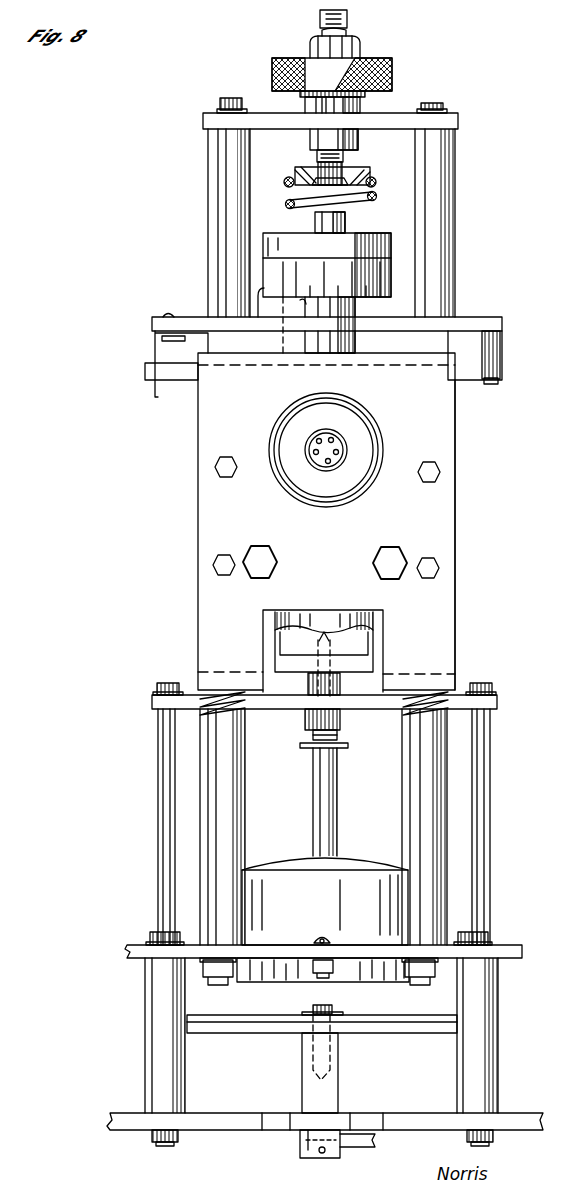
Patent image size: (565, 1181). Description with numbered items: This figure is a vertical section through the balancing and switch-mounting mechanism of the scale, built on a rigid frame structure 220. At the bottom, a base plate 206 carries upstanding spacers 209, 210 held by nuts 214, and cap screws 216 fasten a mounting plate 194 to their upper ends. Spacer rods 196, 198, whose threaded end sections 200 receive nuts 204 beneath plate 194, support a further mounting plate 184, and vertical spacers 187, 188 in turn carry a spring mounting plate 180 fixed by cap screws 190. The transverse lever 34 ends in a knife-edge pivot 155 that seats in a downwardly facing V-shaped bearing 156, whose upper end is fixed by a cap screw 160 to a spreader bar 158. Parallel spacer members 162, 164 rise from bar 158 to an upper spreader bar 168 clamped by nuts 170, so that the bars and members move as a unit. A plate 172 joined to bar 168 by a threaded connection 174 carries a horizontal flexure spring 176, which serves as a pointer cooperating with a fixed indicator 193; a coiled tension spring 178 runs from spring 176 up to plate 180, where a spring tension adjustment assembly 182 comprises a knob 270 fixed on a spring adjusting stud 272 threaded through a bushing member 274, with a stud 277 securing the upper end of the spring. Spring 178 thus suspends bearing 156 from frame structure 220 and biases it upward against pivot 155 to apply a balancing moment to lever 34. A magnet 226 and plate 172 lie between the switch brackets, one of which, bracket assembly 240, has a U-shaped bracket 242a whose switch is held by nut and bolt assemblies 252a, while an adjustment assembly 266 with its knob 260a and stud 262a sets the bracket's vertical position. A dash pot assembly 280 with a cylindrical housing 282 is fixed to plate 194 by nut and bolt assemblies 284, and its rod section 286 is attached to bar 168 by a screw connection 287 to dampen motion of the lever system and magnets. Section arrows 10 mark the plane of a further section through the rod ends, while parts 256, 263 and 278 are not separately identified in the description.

The section line 10 is at (421, 302).
The transverse lever 34 is at (357, 1148).
The knife-edge pivot 155 is at (300, 1142).
The V-shaped bearing 156 is at (302, 1075).
The spreader bar 158 is at (239, 1030).
The cap screw 160 is at (334, 1008).
The spacer member 162 is at (490, 833).
The spacer member 164 is at (158, 821).
The spreader bar 168 is at (498, 702).
The nuts 170 is at (169, 683).
The plate 172 is at (372, 640).
The threaded connection 174 is at (341, 680).
The flexure spring 176 is at (463, 382).
The coiled tension spring 178 is at (375, 182).
The spring mounting plate 180 is at (203, 123).
The spring tension adjustment assembly 182 is at (361, 107).
The mounting plate 184 is at (469, 317).
The spacer 187 is at (446, 166).
The spacer 188 is at (209, 189).
The cap screws 190 is at (233, 98).
The fixed indicator 193 is at (502, 365).
The mounting plate 194 is at (128, 956).
The spacer rod 196 is at (238, 776).
The spacer rod 198 is at (412, 776).
The threaded sections 200 is at (228, 986).
The nuts 204 is at (210, 970).
The base plate 206 is at (396, 1118).
The spacer 209 is at (183, 1075).
The spacer 210 is at (500, 997).
The nut 214 is at (178, 1136).
The cap screws 216 is at (151, 934).
The frame structure 220 is at (125, 940).
The magnet 226 is at (347, 612).
The bracket assembly 240 is at (463, 462).
The U-shaped bracket 242a is at (456, 500).
The nut and bolt assemblies 252a is at (383, 556).
The spring 256 is at (200, 700).
The knob 260a is at (298, 238).
The stud 262a is at (340, 223).
The dial support 263 is at (350, 318).
The adjustment assembly 266 is at (393, 248).
The knob 270 is at (392, 77).
The spring adjusting stud 272 is at (344, 156).
The bushing member 274 is at (310, 109).
The stud 277 is at (306, 171).
The screw shank 278 is at (312, 145).
The dash pot assembly 280 is at (292, 852).
The cylindrical housing 282 is at (350, 860).
The nut and bolt assemblies 284 is at (322, 936).
The rod section 286 is at (318, 794).
The screw connection 287 is at (305, 736).